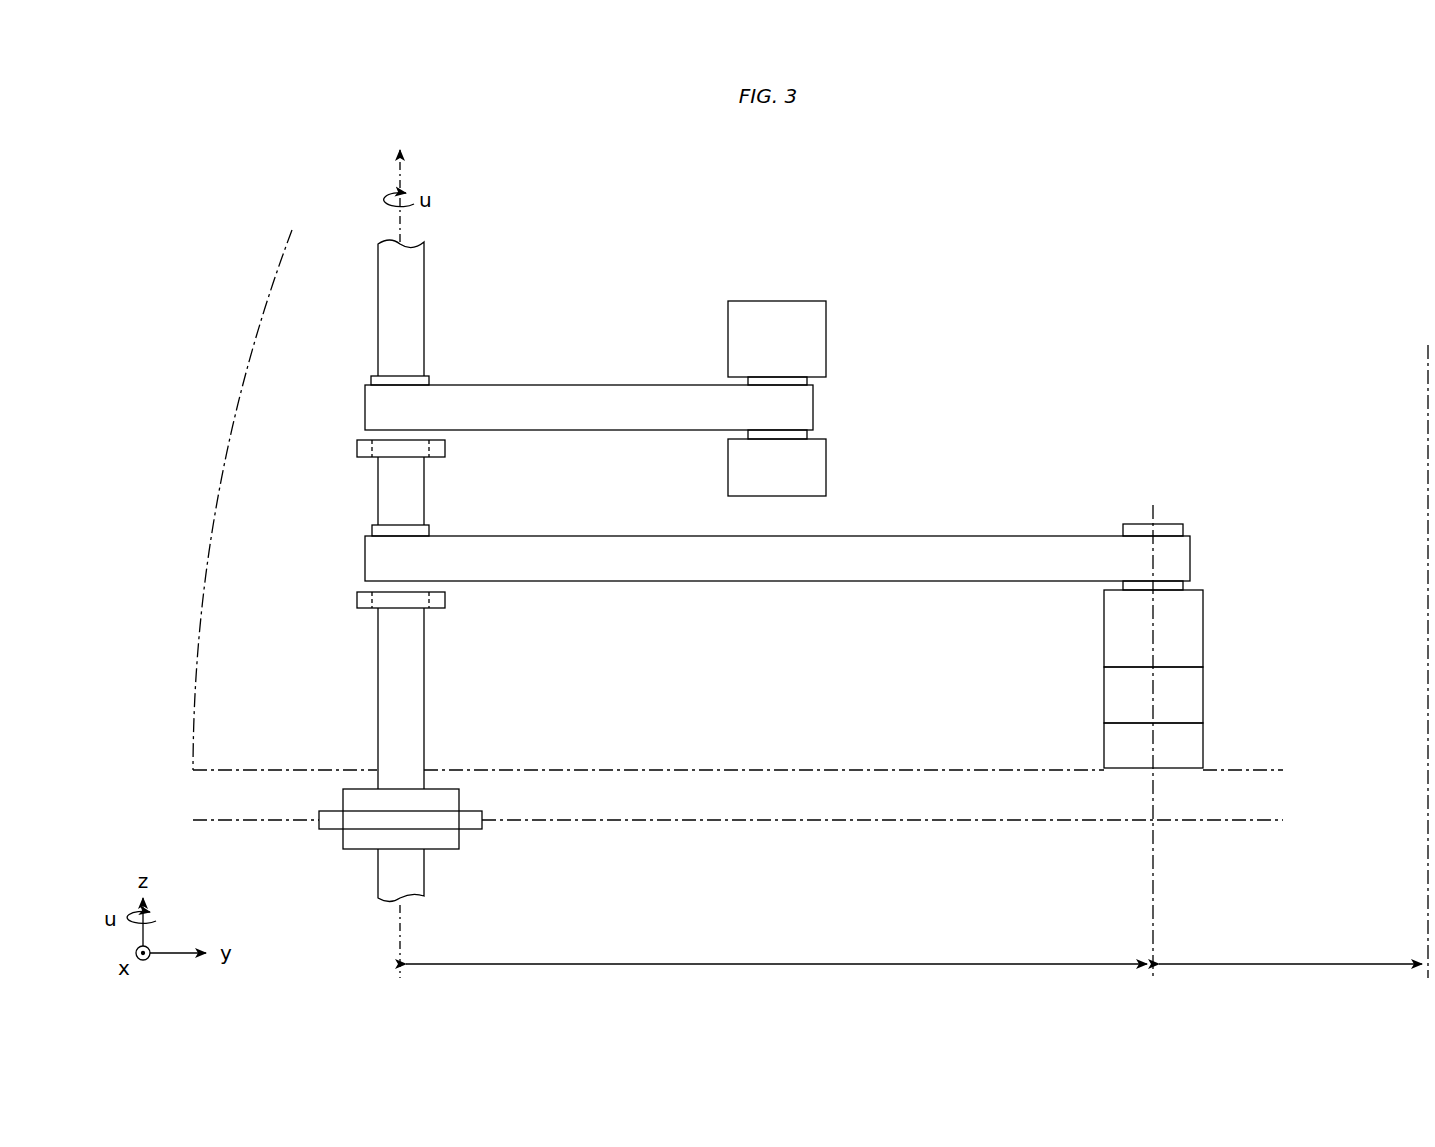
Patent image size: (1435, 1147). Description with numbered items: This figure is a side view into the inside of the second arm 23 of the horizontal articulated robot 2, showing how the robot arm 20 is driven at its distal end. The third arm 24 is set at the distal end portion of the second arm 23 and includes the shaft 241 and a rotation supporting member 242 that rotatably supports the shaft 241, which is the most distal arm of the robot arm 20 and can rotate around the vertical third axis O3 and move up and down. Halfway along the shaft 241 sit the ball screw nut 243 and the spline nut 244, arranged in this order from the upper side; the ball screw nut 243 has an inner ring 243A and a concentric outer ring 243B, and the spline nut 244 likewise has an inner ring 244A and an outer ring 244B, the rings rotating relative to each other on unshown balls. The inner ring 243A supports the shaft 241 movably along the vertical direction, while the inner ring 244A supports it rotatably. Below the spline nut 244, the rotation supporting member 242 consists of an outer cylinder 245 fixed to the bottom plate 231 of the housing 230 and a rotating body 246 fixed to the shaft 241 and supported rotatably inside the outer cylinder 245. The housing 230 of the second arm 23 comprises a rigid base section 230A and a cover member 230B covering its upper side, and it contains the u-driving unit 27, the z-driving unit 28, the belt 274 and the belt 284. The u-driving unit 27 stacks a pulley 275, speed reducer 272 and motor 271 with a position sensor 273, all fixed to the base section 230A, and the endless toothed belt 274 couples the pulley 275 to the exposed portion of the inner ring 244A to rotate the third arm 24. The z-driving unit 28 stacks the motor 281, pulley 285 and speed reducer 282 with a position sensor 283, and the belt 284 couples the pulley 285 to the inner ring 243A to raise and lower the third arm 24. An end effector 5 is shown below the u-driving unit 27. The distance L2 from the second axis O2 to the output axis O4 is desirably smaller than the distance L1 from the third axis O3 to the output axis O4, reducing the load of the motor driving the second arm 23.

The robot 2 is at (980, 196).
The robot arm 20 is at (884, 246).
The second arm 23 is at (230, 424).
The housing 230 is at (256, 314).
The base section 230A is at (813, 797).
The cover member 230B is at (203, 548).
The bottom plate 231 is at (975, 830).
The third arm 24 is at (405, 571).
The shaft 241 is at (405, 281).
The rotation supporting member 242 is at (376, 858).
The ball screw nut 243 is at (402, 410).
The inner ring 243A is at (425, 381).
The outer ring 243B is at (437, 449).
The spline nut 244 is at (402, 561).
The inner ring 244A is at (425, 532).
The outer ring 244B is at (437, 599).
The outer cylinder 245 is at (447, 839).
The rotating body 246 is at (428, 838).
The u-driving unit 27 is at (1190, 606).
The motor 271 is at (1177, 697).
The speed reducer 272 is at (1177, 616).
The position sensor 273 is at (1168, 643).
The belt 274 is at (590, 560).
The pulley 275 is at (1172, 587).
The z-driving unit 28 is at (815, 363).
The motor 281 is at (797, 352).
The speed reducer 282 is at (797, 465).
The position sensor 283 is at (783, 333).
The belt 284 is at (652, 402).
The pulley 285 is at (808, 381).
The end effector 5 is at (1177, 747).
The third axis O3 is at (398, 930).
The output axis O4 is at (1153, 878).
The second axis O2 is at (1428, 878).
The distance L1 is at (776, 975).
The distance L2 is at (1290, 975).